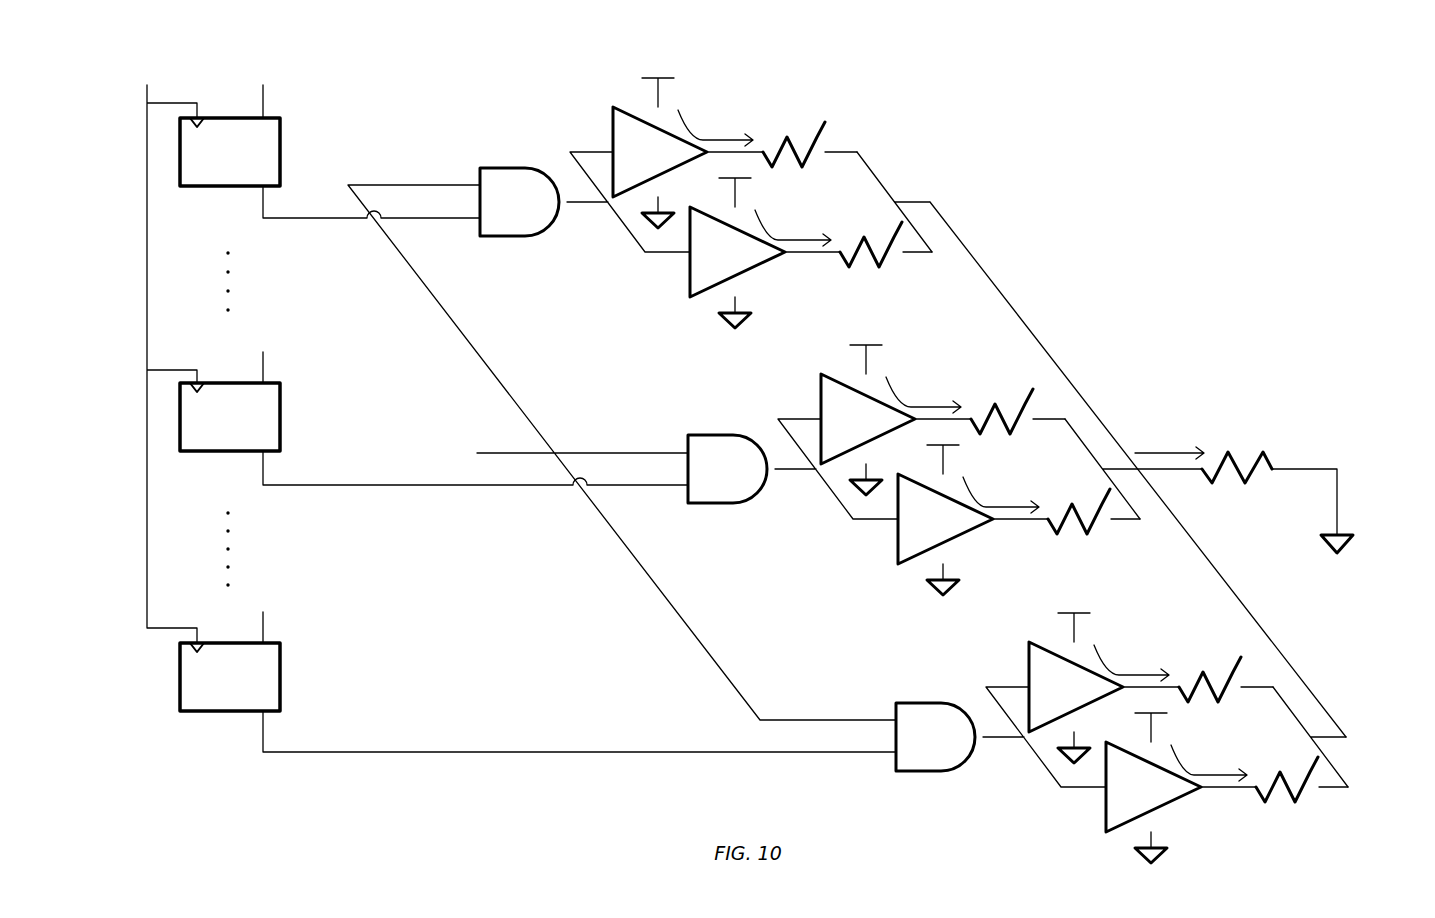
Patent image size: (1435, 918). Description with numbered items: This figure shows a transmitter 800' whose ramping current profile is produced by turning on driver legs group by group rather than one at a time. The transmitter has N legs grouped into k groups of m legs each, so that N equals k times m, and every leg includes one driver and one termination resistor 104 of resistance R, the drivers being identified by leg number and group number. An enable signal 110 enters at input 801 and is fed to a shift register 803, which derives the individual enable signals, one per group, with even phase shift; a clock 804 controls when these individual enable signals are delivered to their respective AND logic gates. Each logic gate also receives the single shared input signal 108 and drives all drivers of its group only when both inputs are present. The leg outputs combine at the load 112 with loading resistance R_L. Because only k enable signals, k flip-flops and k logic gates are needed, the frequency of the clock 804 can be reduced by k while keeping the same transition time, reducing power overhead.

The transmitter 800' is at (1087, 109).
The shift register 803 is at (230, 66).
The input 801 is at (266, 116).
The clock 804 is at (163, 352).
The enable signal 110 is at (264, 352).
The input signal 108 is at (622, 452).
The termination resistor 104 is at (788, 137).
The load 112 is at (1248, 484).